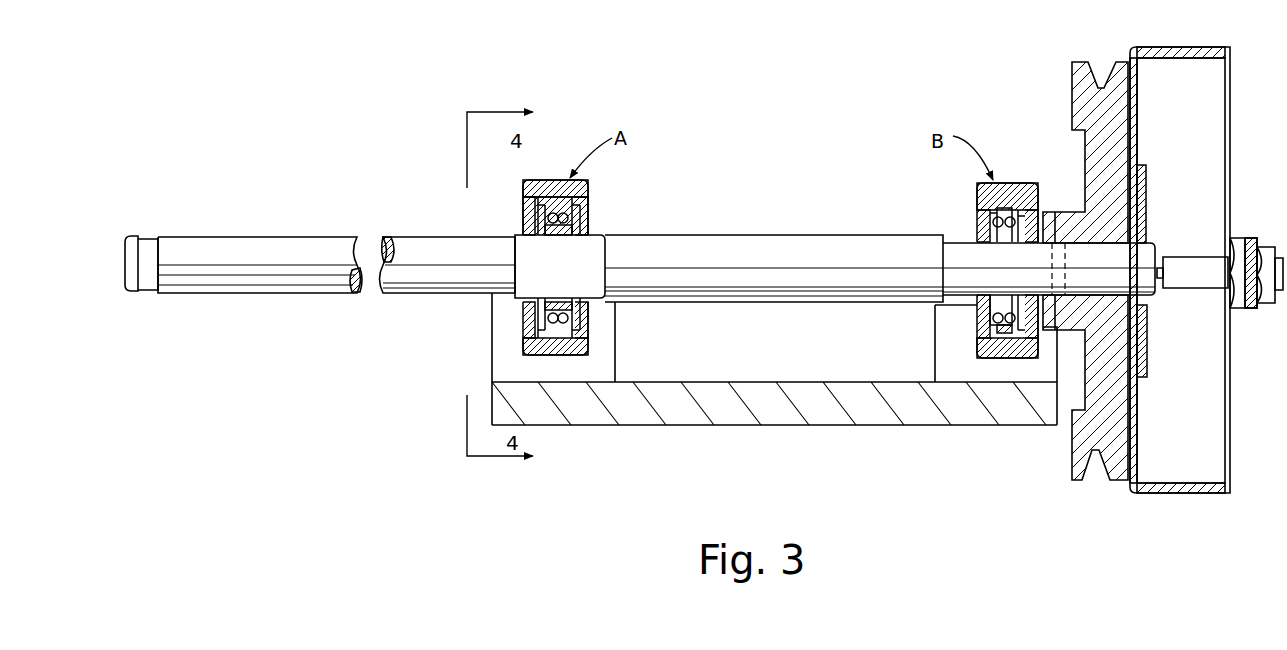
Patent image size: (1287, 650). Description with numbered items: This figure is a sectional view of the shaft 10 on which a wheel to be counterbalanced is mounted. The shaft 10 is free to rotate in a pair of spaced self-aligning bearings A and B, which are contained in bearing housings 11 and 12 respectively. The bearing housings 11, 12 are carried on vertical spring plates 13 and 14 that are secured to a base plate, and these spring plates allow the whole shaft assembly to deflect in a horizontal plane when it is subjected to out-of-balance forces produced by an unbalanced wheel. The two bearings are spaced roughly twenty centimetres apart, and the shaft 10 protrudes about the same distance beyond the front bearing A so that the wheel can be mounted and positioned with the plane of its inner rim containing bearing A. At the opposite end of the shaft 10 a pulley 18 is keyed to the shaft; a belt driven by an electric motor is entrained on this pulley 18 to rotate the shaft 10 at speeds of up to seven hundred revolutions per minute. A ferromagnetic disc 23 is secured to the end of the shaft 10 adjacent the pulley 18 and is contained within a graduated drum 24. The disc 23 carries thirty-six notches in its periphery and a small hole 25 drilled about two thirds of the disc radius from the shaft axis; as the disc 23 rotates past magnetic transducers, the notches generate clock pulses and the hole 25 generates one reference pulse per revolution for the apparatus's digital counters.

The shaft 10 is at (312, 228).
The bearing housing 11 is at (563, 356).
The bearing housing 12 is at (975, 348).
The vertical spring plate 13 is at (603, 340).
The vertical spring plate 14 is at (938, 328).
The pulley 18 is at (1090, 60).
The ferromagnetic disc 23 is at (1147, 318).
The graduated drum 24 is at (1160, 494).
The hole 25 is at (1147, 207).